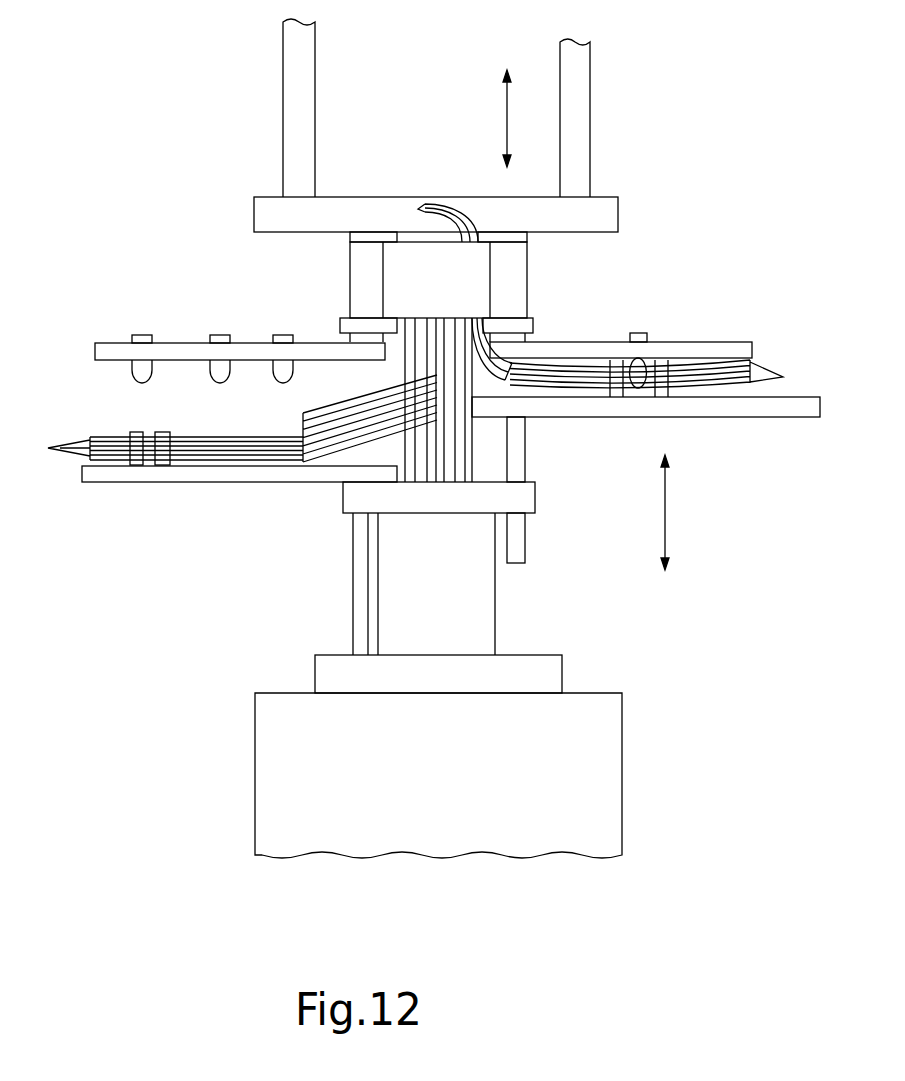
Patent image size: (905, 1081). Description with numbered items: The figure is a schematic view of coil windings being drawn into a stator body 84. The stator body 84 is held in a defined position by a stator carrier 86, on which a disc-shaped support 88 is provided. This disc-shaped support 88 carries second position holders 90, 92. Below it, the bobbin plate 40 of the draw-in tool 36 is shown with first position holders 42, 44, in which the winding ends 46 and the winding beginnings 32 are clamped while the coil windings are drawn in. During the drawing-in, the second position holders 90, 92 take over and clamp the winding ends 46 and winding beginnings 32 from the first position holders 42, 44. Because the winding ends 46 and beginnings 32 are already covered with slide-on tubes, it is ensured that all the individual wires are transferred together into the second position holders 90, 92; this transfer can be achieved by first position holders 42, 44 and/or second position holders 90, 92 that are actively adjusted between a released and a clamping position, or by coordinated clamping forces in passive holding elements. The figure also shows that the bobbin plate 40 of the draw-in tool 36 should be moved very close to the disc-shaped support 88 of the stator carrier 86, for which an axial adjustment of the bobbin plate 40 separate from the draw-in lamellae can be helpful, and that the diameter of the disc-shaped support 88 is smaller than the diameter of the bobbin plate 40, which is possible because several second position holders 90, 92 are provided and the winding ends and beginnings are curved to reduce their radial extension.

The stator carrier 86 is at (548, 215).
The stator body 84 is at (468, 287).
The draw-in tool 36 is at (477, 460).
The disc-shaped support 88 is at (183, 342).
The second position holder 90 is at (677, 308).
The second position holder 92 is at (222, 335).
The winding end 46 is at (62, 457).
The winding beginning 32 is at (767, 368).
The first position holder 42 is at (610, 428).
The first position holder 44 is at (677, 438).
The bobbin plate 40 is at (762, 445).